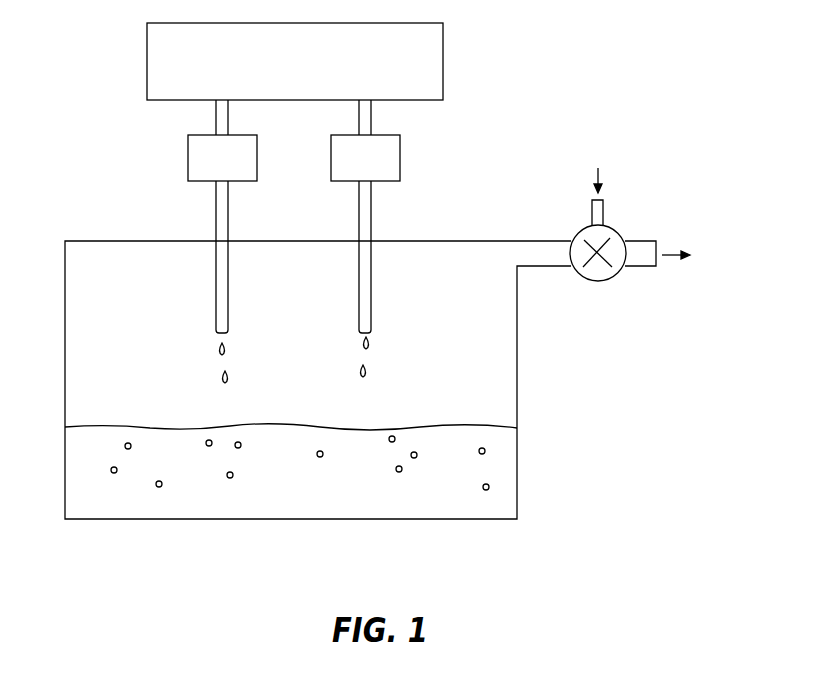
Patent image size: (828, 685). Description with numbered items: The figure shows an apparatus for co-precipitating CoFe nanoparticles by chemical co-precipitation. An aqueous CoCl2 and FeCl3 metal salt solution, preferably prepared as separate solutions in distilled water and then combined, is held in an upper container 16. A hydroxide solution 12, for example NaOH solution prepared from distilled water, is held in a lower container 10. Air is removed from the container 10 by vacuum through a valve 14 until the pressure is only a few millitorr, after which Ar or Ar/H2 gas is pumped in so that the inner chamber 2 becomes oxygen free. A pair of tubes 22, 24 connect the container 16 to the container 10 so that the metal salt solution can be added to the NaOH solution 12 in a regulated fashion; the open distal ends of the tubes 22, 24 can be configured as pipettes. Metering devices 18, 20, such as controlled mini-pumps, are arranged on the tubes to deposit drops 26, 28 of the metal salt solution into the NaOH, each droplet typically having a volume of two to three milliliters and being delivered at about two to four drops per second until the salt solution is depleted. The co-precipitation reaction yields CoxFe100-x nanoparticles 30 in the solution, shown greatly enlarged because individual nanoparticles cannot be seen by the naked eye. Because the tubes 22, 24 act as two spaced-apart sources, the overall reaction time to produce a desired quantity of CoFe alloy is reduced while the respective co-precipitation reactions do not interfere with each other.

The chamber 2 is at (118, 338).
The container 10 is at (65, 457).
The hydroxide solution 12 is at (438, 480).
The valve 14 is at (597, 282).
The container 16 is at (443, 86).
The metering device 18 is at (238, 175).
The metering device 20 is at (381, 175).
The tube 22 is at (228, 280).
The tube 24 is at (371, 280).
The drops 26 is at (231, 347).
The drops 28 is at (375, 339).
The nanoparticles 30 is at (224, 481).